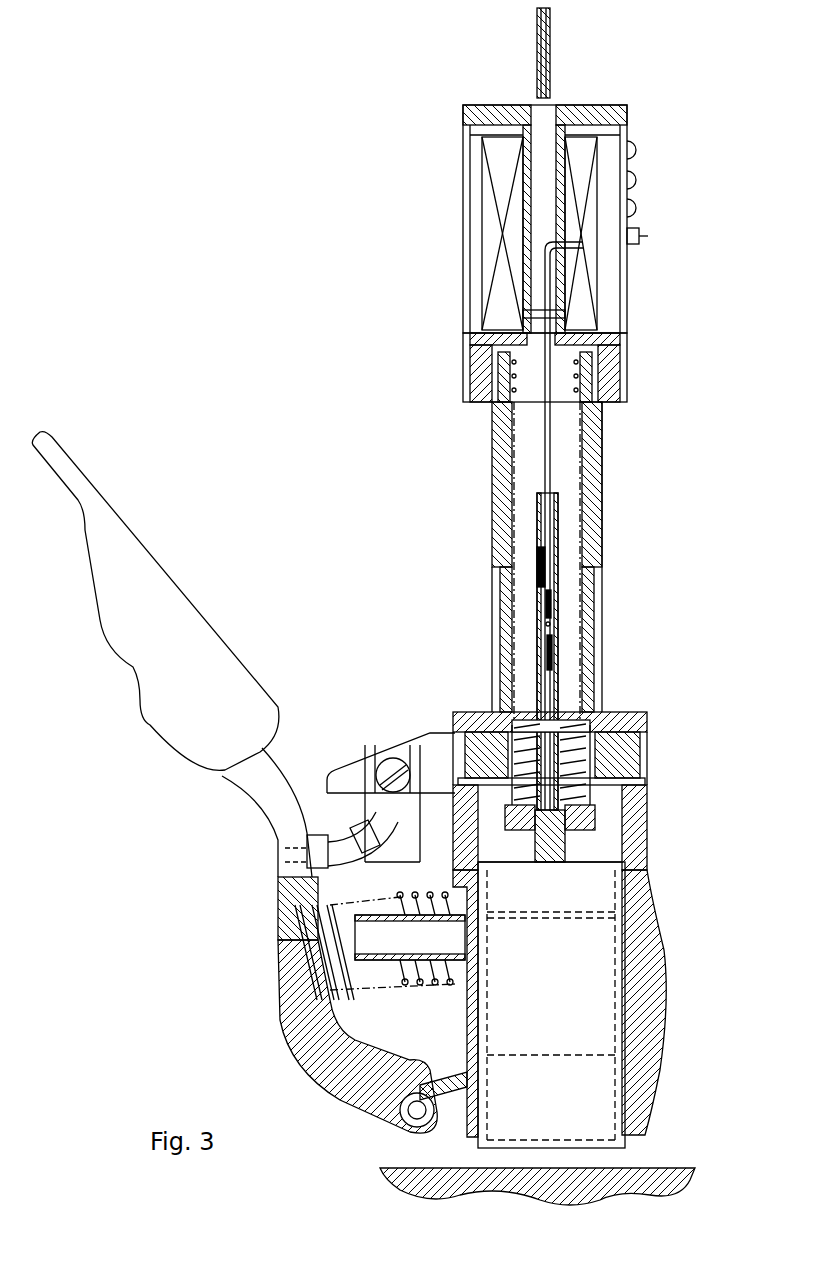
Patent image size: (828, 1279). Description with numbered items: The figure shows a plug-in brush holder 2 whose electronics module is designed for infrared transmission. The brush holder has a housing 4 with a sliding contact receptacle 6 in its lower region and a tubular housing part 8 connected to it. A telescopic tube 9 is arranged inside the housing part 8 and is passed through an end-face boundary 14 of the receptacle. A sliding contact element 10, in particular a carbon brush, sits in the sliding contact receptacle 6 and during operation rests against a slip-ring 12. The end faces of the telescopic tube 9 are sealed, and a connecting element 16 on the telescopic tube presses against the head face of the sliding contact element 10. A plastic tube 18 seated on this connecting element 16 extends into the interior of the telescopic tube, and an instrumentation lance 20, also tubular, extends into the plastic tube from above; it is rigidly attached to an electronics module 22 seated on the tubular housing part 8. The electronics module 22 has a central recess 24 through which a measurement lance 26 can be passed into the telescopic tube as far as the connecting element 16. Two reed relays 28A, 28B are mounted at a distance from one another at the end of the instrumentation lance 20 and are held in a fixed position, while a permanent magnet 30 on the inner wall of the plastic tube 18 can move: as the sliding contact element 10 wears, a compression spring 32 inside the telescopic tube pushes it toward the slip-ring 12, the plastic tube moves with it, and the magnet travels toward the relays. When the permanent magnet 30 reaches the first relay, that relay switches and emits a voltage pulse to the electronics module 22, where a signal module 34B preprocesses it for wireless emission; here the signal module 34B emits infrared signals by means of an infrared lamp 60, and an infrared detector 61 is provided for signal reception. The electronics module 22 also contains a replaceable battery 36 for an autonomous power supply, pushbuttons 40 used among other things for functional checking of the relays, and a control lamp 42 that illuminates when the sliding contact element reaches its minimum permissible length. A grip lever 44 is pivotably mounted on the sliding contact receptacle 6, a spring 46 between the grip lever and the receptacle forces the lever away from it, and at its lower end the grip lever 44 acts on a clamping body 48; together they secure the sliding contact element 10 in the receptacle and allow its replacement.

The plug-in brush holder 2 is at (710, 556).
The housing 4 is at (604, 686).
The sliding contact receptacle 6 is at (648, 953).
The tubular housing part 8 is at (600, 470).
The telescopic tube 9 is at (597, 440).
The sliding contact element 10 is at (598, 1020).
The slip-ring 12 is at (670, 1178).
The end-face boundary 14 is at (610, 758).
The connecting element 16 is at (560, 843).
The plastic tube 18 is at (558, 524).
The instrumentation lance 20 is at (545, 472).
The electronics module 22 is at (632, 292).
The central recess 24 is at (540, 300).
The measurement lance 26 is at (548, 42).
The first relay 28A is at (552, 608).
The second relay 28B is at (552, 648).
The permanent magnet 30 is at (537, 565).
The compression spring 32 is at (530, 730).
The signal module 34B is at (580, 148).
The replaceable battery 36 is at (497, 182).
The pushbuttons 40 is at (648, 236).
The control lamp 42 is at (637, 208).
The grip lever 44 is at (275, 800).
The spring 46 is at (315, 990).
The clamping body 48 is at (405, 1115).
The infrared lamp 60 is at (637, 150).
The infrared detector 61 is at (637, 180).